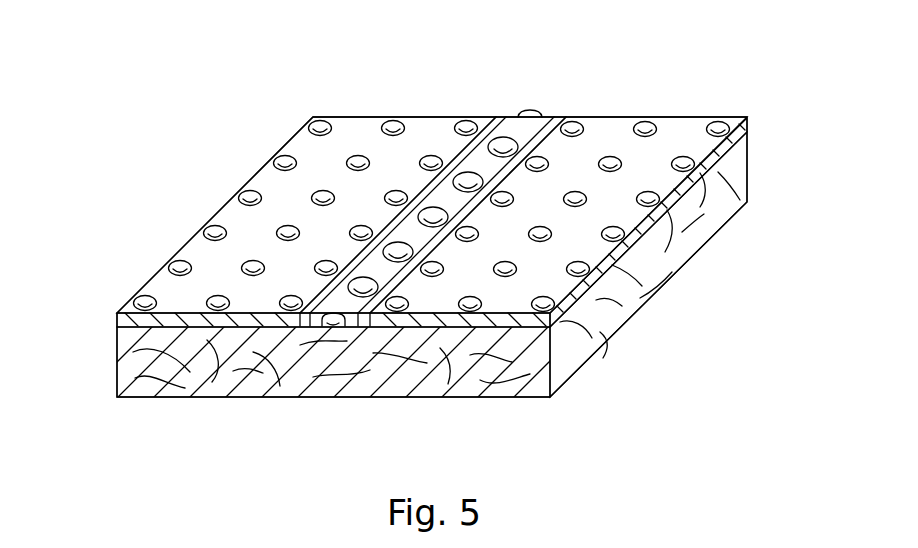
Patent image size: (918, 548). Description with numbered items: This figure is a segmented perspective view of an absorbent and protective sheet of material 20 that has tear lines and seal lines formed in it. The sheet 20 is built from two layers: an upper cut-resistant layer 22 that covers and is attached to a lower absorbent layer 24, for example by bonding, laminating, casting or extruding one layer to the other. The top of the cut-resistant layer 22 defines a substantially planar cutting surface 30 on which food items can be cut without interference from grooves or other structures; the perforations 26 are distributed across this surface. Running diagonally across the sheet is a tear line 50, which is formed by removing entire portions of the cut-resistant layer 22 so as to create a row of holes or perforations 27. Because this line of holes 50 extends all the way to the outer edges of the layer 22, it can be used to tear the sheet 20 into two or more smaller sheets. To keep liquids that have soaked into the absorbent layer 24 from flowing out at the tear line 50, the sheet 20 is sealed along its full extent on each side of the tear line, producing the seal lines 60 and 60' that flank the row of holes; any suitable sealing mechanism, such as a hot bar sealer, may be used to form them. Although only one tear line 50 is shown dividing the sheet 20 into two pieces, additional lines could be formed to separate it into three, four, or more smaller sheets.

The absorbent and protective sheet of material 20 is at (172, 152).
The cut-resistant layer 22 is at (748, 130).
The absorbent layer 24 is at (744, 160).
The perforations 26 is at (322, 119).
The holes or perforations 27 is at (503, 137).
The cutting surface 30 is at (673, 145).
The tear line 50 is at (545, 87).
The seal line 60 is at (365, 250).
The seal line 60' is at (497, 253).